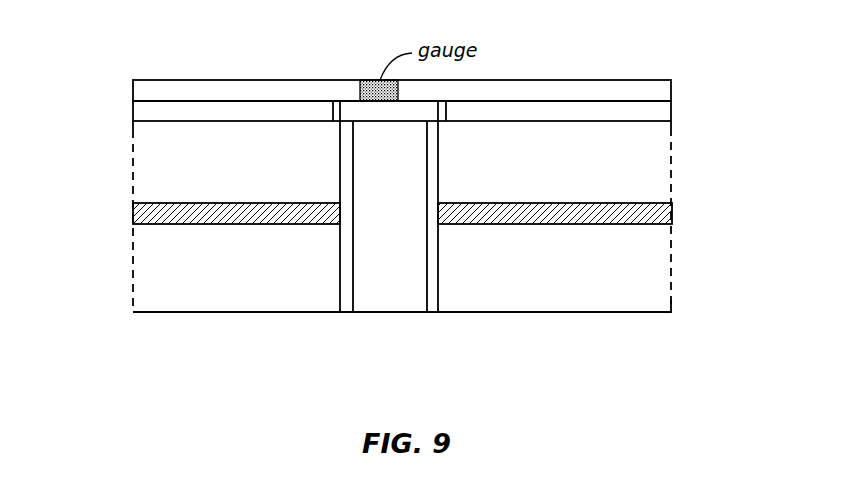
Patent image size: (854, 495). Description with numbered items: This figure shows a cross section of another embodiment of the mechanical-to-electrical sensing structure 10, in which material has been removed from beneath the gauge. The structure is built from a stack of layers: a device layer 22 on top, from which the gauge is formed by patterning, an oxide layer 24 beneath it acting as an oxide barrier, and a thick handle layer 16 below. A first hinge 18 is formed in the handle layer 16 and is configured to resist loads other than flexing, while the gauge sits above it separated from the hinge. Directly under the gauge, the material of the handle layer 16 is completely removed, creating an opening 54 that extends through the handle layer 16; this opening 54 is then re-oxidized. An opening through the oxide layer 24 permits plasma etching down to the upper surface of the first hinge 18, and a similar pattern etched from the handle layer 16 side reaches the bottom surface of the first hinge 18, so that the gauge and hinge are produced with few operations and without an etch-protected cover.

The mechanical-to-electrical sensing structure 10 is at (182, 327).
The handle layer 16 is at (122, 123).
The first hinge 18 is at (240, 226).
The device layer 22 is at (136, 91).
The oxide layer 24 is at (666, 110).
The opening 54 is at (385, 300).